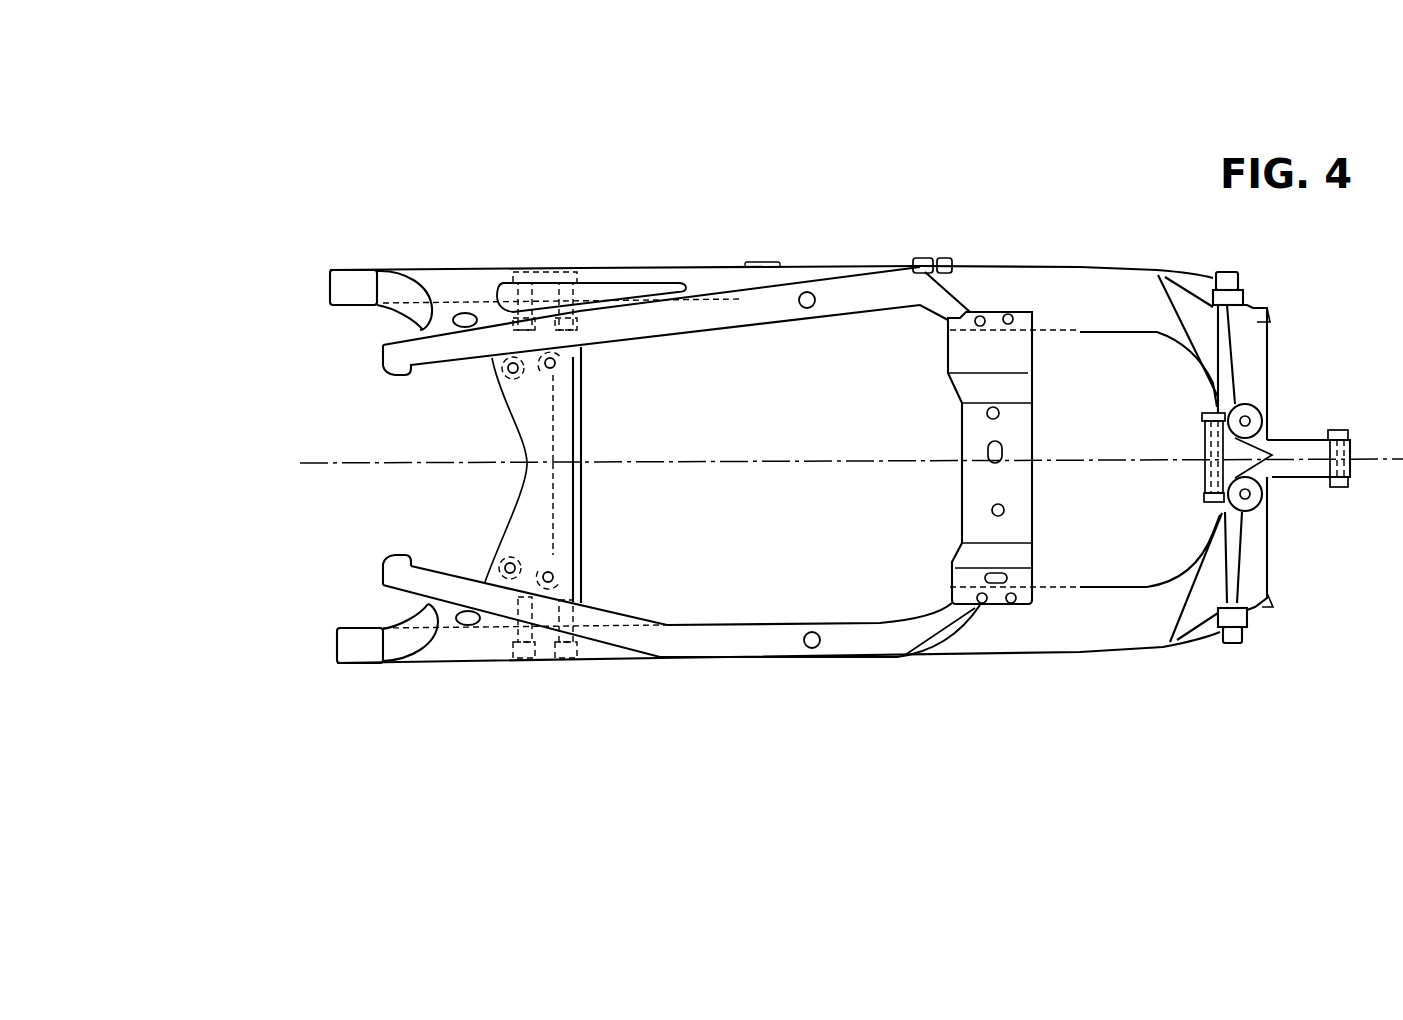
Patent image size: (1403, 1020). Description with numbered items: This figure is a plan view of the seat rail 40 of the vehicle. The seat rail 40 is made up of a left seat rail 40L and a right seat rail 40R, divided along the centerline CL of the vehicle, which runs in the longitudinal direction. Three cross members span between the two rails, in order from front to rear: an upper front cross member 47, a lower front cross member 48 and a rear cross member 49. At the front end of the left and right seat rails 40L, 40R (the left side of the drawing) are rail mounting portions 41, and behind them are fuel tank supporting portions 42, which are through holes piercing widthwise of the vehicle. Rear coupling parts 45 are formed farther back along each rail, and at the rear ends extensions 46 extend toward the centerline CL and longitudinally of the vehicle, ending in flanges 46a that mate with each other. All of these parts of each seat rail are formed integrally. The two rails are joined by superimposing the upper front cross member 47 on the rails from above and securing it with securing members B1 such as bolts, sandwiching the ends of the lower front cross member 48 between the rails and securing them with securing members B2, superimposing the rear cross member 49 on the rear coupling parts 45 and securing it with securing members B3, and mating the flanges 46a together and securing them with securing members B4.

The seat rail 40 is at (298, 134).
The right seat rail 40R is at (719, 235).
The left seat rail 40L is at (713, 690).
The rail mounting portion 41 is at (382, 348).
The fuel tank supporting portion 42 is at (455, 313).
The rear coupling part 45 is at (978, 316).
The extension 46 is at (1257, 350).
The flange 46a is at (1292, 447).
The upper front cross member 47 is at (575, 433).
The lower front cross member 48 is at (580, 515).
The rear cross member 49 is at (1032, 427).
The securing member B1 is at (548, 368).
The securing member B2 is at (563, 268).
The securing member B3 is at (1010, 314).
The securing member B4 is at (1213, 407).
The centerline CL is at (300, 463).